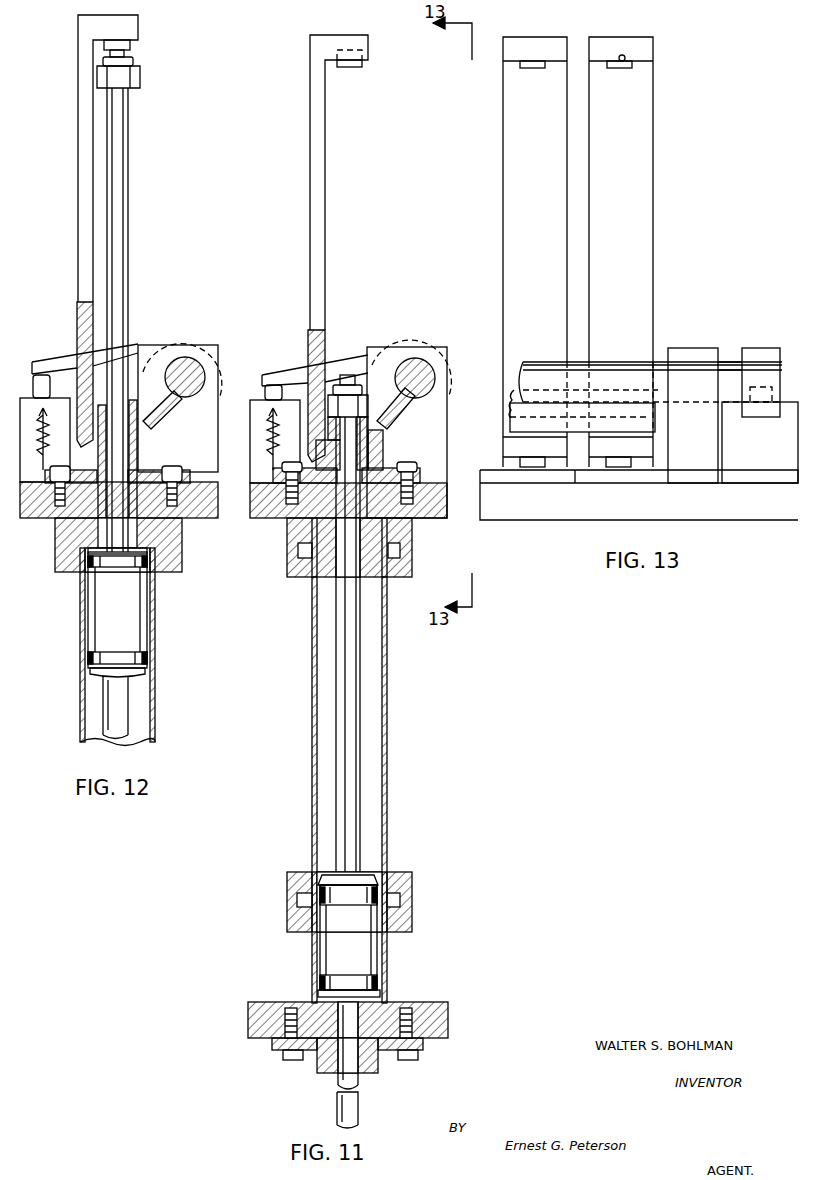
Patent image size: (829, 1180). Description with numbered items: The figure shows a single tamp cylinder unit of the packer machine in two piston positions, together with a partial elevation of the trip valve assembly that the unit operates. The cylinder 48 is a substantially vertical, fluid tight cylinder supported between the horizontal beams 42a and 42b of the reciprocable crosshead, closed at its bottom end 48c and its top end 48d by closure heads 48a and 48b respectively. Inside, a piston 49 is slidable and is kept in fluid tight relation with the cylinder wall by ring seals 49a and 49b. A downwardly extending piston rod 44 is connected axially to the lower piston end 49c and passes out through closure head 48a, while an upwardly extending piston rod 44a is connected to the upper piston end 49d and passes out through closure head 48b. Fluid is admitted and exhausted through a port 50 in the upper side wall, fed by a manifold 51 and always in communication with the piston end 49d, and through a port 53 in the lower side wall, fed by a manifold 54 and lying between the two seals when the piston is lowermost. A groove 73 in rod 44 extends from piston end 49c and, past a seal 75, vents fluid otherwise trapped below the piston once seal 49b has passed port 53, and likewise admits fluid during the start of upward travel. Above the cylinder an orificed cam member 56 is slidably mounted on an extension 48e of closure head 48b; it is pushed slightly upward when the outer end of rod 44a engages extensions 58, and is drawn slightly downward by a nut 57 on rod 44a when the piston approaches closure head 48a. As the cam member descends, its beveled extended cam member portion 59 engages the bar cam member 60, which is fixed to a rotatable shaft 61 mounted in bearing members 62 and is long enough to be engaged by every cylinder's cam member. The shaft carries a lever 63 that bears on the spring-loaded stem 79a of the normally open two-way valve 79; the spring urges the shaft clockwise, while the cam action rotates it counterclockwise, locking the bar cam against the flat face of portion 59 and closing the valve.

In FIG. 11, the horizontal beam 42a is at (447, 516).
In FIG. 11, the horizontal beam 42b is at (448, 1010).
In FIG. 12, the downwardly extending piston rod 44 is at (128, 712).
In FIG. 11, the downwardly extending piston rod 44 is at (358, 1108).
In FIG. 12, the upwardly extending piston rod 44a is at (128, 308).
In FIG. 11, the upwardly extending piston rod 44a is at (360, 671).
In FIG. 12, the fluid tight cylinder 48 is at (157, 657).
In FIG. 11, the fluid tight cylinder 48 is at (387, 736).
In FIG. 11, the closure head 48a is at (327, 1053).
In FIG. 11, the closure head 48b is at (398, 468).
In FIG. 11, the bottom end of cylinder 48c is at (312, 1008).
In FIG. 11, the top end of cylinder 48d is at (410, 522).
In FIG. 11, the extension of closure head 48e is at (366, 452).
In FIG. 12, the piston 49 is at (125, 610).
In FIG. 11, the piston 49 is at (356, 941).
In FIG. 11, the ring seal 49a is at (347, 893).
In FIG. 11, the ring seal 49b is at (324, 984).
In FIG. 11, the piston end 49c is at (380, 997).
In FIG. 11, the piston end 49d is at (387, 864).
In FIG. 12, the port 50 is at (150, 549).
In FIG. 11, the port 50 is at (300, 548).
In FIG. 11, the manifold 51 is at (290, 577).
In FIG. 11, the port 53 is at (297, 897).
In FIG. 11, the manifold 54 is at (306, 882).
In FIG. 11, the orificed cam member 56 is at (326, 180).
In FIG. 13, the orificed cam member 56 is at (653, 230).
In FIG. 11, the nut 57 is at (366, 404).
In FIG. 11, the extensions 58 is at (362, 66).
In FIG. 13, the extensions 58 is at (632, 66).
In FIG. 11, the extended cam member portion 59 is at (376, 437).
In FIG. 12, the bar cam member 60 is at (158, 422).
In FIG. 11, the bar cam member 60 is at (400, 418).
In FIG. 13, the bar cam member 60 is at (512, 412).
In FIG. 12, the rotatable shaft 61 is at (187, 397).
In FIG. 11, the rotatable shaft 61 is at (410, 360).
In FIG. 13, the rotatable shaft 61 is at (735, 362).
In FIG. 12, the bearing members 62 is at (208, 346).
In FIG. 11, the bearing members 62 is at (438, 348).
In FIG. 13, the bearing members 62 is at (688, 350).
In FIG. 12, the lever 63 is at (66, 360).
In FIG. 11, the lever 63 is at (292, 373).
In FIG. 13, the lever 63 is at (769, 344).
In FIG. 11, the groove 73 is at (360, 1088).
In FIG. 11, the seal 75 is at (318, 1072).
In FIG. 12, the normally open two-way valve 79 is at (67, 400).
In FIG. 11, the normally open two-way valve 79 is at (250, 430).
In FIG. 13, the normally open two-way valve 79 is at (790, 402).
In FIG. 12, the valve stem 79a is at (41, 374).
In FIG. 11, the valve stem 79a is at (266, 393).